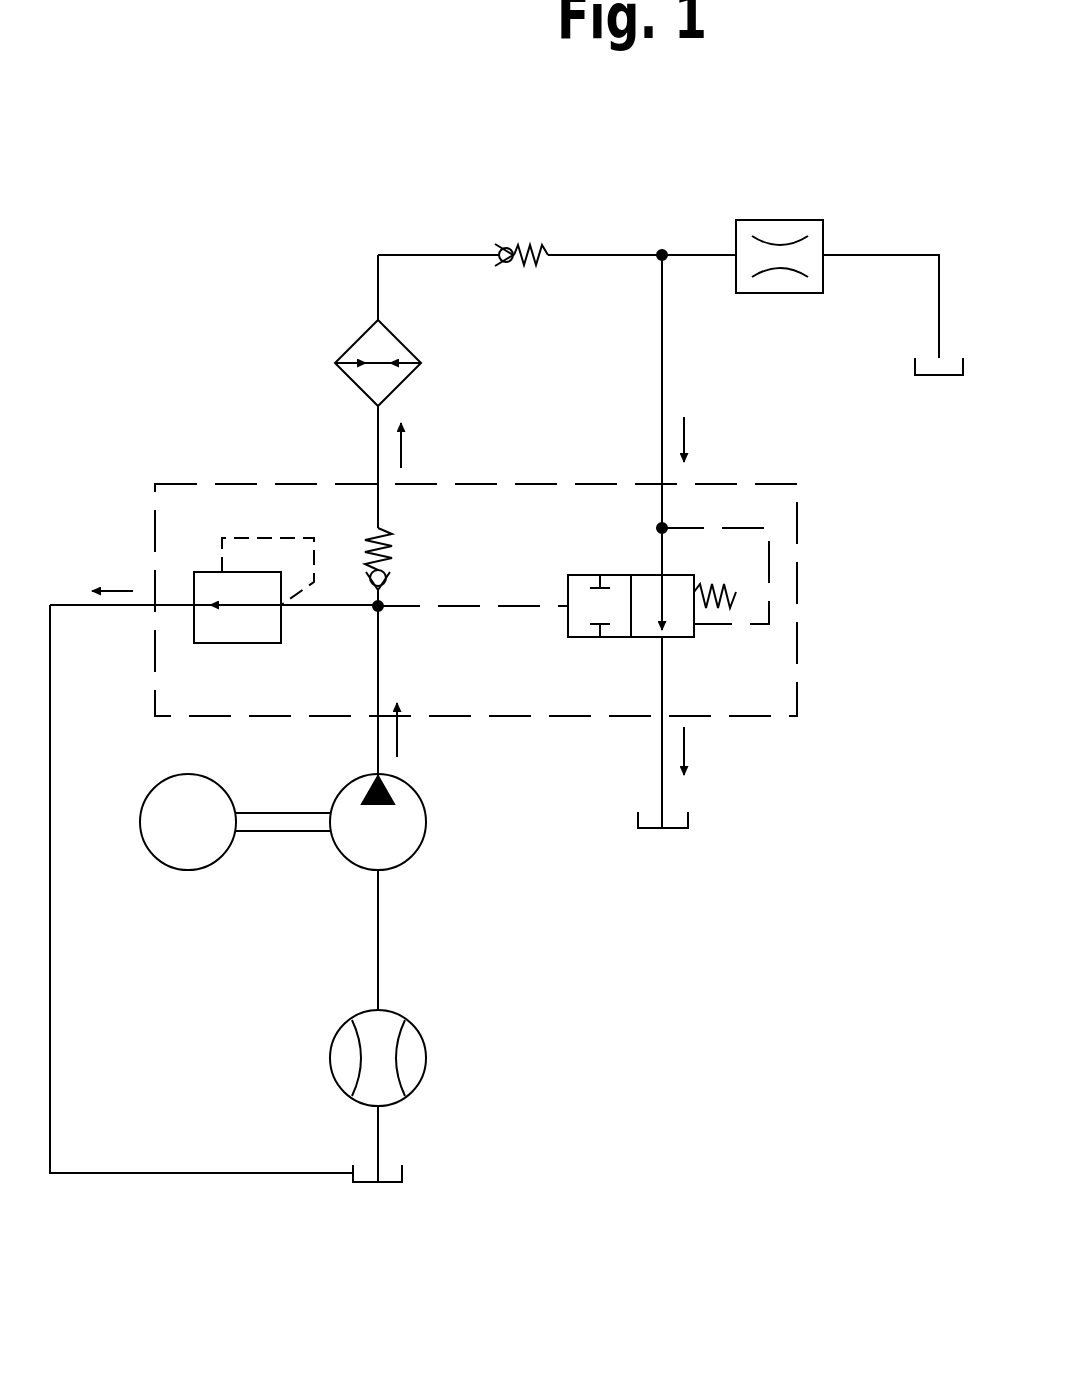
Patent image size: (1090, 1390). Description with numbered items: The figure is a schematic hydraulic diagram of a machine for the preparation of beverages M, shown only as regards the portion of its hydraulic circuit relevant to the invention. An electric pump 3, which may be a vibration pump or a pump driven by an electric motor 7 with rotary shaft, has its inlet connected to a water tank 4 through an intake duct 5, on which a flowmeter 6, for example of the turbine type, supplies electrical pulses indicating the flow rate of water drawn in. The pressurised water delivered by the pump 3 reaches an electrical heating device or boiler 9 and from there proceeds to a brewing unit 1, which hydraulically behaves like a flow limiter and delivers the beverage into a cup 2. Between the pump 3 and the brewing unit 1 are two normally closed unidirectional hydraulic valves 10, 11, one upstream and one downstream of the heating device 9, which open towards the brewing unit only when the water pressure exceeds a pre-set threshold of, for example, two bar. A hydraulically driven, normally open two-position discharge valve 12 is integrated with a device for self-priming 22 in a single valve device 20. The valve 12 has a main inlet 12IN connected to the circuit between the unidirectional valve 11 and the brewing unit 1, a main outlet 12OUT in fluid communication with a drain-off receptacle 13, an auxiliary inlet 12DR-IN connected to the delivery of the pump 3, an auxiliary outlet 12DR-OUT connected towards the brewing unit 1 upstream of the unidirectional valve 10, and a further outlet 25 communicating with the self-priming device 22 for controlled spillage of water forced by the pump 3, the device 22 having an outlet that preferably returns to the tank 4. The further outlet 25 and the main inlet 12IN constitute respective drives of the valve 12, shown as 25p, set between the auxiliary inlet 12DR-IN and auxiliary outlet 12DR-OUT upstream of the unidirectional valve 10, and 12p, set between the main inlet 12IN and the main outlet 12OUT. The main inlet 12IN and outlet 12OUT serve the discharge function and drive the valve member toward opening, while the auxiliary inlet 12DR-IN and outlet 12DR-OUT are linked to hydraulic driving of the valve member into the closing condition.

The machine for the preparation of beverages M is at (286, 237).
The brewing unit 1 is at (787, 220).
The cup 2 is at (925, 375).
The electric pump 3 is at (387, 850).
The water tank 4 is at (390, 1185).
The intake duct 5 is at (378, 953).
The flowmeter 6 is at (350, 1069).
The electric motor 7 is at (177, 842).
The heating device 9 is at (346, 348).
The unidirectional hydraulic valve 10 is at (390, 552).
The unidirectional hydraulic valve 11 is at (521, 240).
The discharge valve 12 is at (633, 557).
The main inlet 12IN is at (664, 508).
The main outlet 12OUT is at (663, 673).
The drive 12p is at (750, 623).
The auxiliary outlet 12DR-OUT is at (372, 512).
The auxiliary inlet 12DR-IN is at (378, 653).
The drain-off receptacle 13 is at (673, 828).
The valve device 20 is at (157, 463).
The device for self-priming 22 is at (202, 560).
The further outlet 25 is at (342, 607).
The drive 25p is at (497, 606).